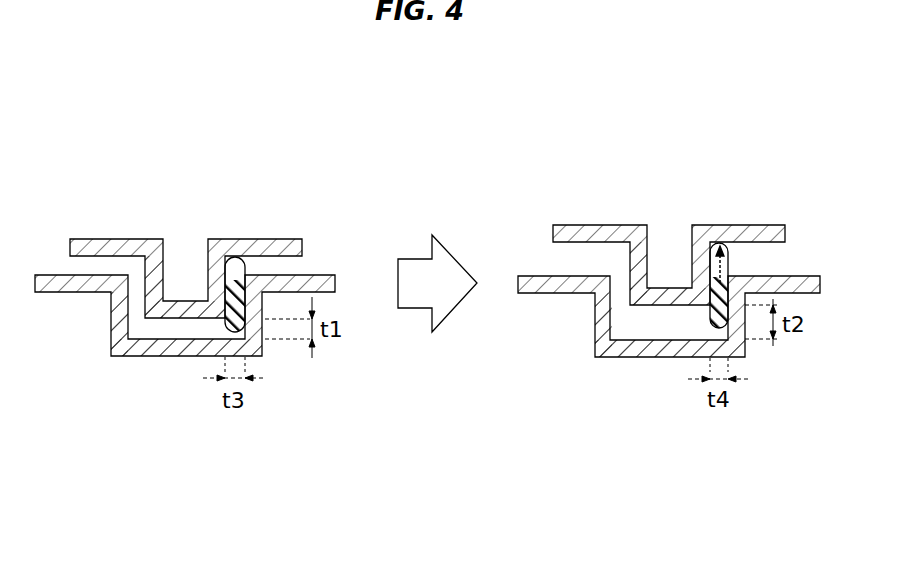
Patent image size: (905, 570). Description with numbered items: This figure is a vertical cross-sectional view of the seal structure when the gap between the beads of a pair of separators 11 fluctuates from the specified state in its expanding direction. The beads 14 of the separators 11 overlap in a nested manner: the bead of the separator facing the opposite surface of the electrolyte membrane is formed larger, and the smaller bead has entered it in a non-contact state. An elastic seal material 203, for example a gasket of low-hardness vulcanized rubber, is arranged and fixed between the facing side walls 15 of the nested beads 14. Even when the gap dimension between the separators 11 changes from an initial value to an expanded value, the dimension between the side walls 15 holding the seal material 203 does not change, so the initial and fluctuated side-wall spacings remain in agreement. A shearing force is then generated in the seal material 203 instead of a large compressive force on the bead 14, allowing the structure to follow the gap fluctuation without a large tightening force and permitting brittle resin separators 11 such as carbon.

The separator 11 is at (273, 239).
The bead 14 is at (163, 322).
The side wall 15 is at (137, 300).
The seal material 203 is at (233, 262).